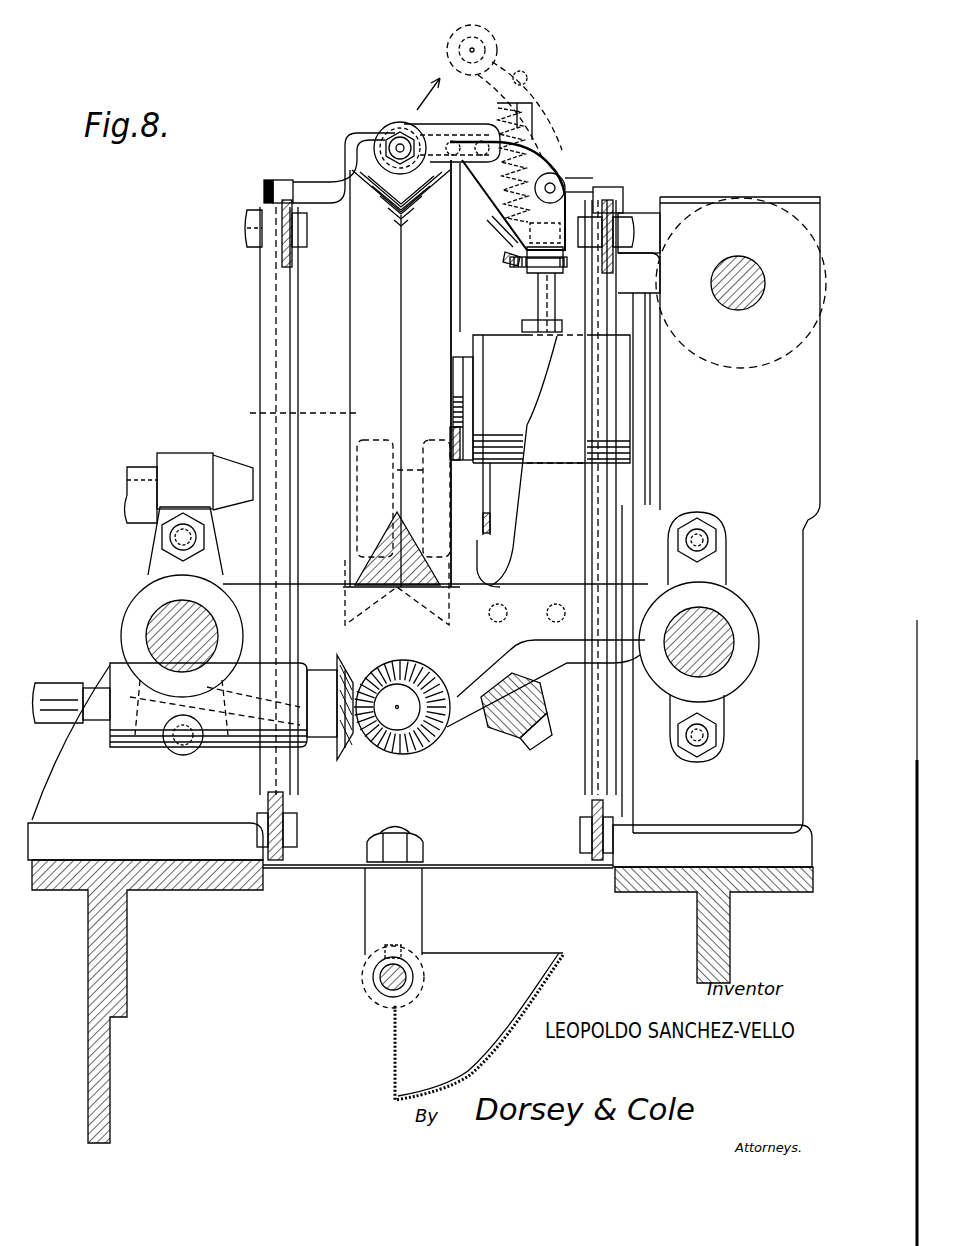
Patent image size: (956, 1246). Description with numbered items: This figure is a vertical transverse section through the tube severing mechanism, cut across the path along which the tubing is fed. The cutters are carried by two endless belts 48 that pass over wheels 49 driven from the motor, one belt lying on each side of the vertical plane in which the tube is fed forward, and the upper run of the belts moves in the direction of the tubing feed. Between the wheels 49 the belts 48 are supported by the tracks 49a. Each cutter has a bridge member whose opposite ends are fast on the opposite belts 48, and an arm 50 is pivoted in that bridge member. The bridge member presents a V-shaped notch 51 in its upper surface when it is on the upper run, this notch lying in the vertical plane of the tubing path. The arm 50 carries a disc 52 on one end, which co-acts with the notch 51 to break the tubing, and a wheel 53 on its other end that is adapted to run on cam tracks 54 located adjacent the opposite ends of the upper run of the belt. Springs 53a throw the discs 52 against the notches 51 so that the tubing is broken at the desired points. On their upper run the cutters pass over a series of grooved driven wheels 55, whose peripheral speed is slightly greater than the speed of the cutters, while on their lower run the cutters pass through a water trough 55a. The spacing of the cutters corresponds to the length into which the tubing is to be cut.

The endless belts 48 is at (277, 178).
The wheels 49 is at (355, 143).
The tracks 49a is at (630, 196).
The arm 50 is at (470, 135).
The V-shaped notch 51 is at (387, 132).
The disc 52 is at (465, 36).
The wheel 53 is at (527, 262).
The springs 53a is at (530, 137).
The cam tracks 54 is at (510, 261).
The grooved driven wheels 55 is at (323, 269).
The water trough 55a is at (517, 993).